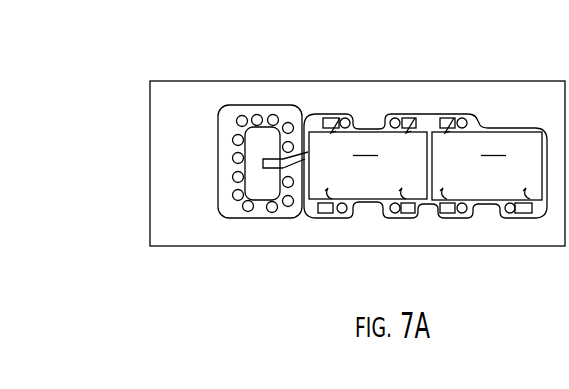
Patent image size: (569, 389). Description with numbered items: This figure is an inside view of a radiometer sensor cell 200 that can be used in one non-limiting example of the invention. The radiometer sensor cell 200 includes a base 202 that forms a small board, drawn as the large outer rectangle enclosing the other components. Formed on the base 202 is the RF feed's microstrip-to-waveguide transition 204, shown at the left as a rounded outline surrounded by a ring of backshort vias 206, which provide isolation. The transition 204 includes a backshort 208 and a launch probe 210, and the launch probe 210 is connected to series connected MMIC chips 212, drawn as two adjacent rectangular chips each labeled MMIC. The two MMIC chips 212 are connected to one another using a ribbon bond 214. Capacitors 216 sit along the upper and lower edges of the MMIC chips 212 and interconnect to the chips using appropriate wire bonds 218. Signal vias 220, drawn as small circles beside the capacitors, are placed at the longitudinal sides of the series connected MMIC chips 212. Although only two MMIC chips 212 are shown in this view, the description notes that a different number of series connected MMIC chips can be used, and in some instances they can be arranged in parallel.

The radiometer sensor cell 200 is at (339, 33).
The base 202 is at (149, 208).
The microstrip-to-waveguide transition 204 is at (250, 118).
The backshort vias 206 is at (271, 212).
The backshort 208 is at (255, 165).
The launch probe 210 is at (268, 159).
The MMIC chips 212 is at (425, 166).
The ribbon bond 214 is at (478, 128).
The capacitors 216 is at (407, 115).
The wire bonds 218 is at (327, 117).
The signal vias 220 is at (463, 117).